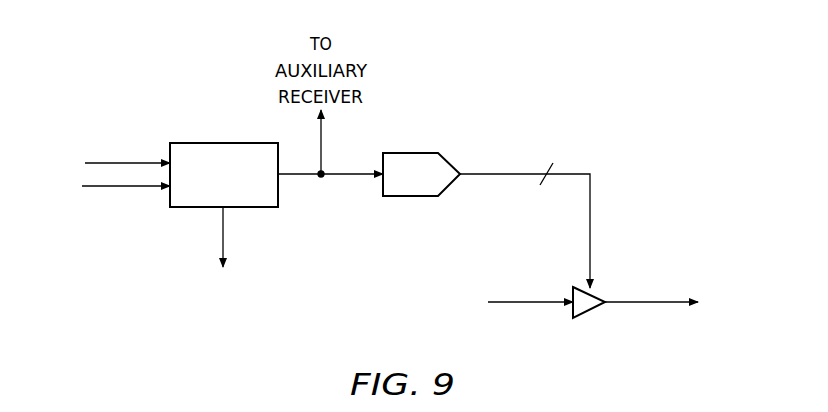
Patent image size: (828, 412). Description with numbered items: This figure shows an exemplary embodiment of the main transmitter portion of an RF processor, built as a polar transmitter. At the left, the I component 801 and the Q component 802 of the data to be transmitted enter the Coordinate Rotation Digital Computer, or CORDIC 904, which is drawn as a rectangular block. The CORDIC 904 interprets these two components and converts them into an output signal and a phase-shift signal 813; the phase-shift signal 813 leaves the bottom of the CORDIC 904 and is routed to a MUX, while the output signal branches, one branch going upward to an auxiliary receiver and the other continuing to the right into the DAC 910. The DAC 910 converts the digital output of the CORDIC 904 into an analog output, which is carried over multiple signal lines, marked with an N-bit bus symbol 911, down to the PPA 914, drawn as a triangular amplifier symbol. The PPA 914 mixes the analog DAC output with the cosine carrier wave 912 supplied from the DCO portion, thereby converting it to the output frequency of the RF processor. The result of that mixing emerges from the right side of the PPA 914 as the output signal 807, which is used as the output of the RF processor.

The I component 801 is at (123, 163).
The Q component 802 is at (123, 187).
The output signal 807 is at (650, 301).
The phase-shift signal 813 is at (223, 227).
The Coordinate Rotation Digital Computer (CORDIC) 904 is at (213, 143).
The DAC 910 is at (410, 153).
The N-bit digital output bus 911 is at (492, 175).
The cosine carrier wave 912 is at (530, 303).
The PPA 914 is at (592, 308).